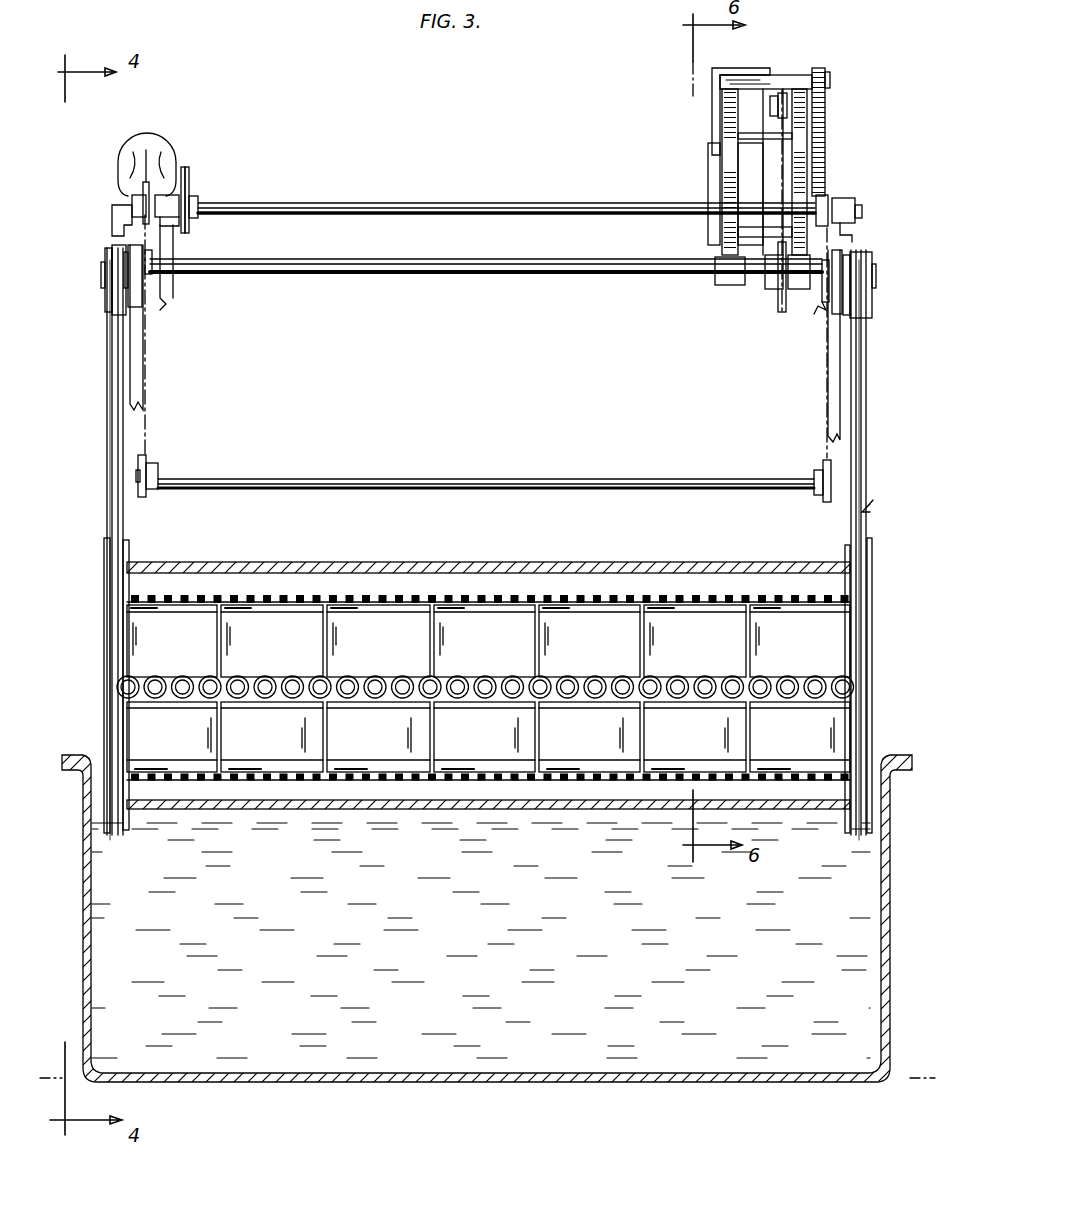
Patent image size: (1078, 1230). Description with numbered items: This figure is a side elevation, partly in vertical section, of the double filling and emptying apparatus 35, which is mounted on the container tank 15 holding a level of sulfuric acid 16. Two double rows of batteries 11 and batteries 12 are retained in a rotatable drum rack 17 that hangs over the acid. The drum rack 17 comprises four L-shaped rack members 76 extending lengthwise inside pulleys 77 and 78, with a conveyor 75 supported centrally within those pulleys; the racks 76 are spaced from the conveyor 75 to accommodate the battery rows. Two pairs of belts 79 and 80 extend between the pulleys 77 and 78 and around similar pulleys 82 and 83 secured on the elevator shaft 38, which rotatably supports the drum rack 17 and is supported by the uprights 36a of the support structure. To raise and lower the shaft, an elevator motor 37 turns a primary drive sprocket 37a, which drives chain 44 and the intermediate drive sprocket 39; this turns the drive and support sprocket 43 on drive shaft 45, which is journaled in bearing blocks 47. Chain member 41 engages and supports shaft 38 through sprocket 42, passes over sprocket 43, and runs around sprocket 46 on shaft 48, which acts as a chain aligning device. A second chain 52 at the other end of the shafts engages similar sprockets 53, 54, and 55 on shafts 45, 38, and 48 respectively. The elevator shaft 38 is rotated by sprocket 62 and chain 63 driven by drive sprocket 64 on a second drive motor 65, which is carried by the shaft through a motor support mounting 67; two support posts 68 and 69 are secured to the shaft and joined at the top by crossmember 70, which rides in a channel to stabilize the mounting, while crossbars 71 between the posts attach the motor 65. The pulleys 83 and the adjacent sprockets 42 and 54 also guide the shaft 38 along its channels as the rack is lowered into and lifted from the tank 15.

The batteries 11 is at (488, 641).
The batteries 12 is at (488, 737).
The container tank 15 is at (803, 1082).
The sulfuric acid 16 is at (705, 1052).
The rotatable drum rack 17 is at (404, 565).
The double filling and emptying apparatus 35 is at (879, 495).
The uprights 36a is at (141, 359).
The elevator motor 37 is at (154, 146).
The primary drive sprocket 37a is at (196, 181).
The elevator shaft 38 is at (452, 268).
The intermediate drive sprocket 39 is at (184, 234).
The chain member 41 is at (147, 440).
The sprocket 42 is at (162, 296).
The drive and support sprocket 43 is at (142, 192).
The chain 44 is at (190, 172).
The drive shaft 45 is at (348, 206).
The sprocket 46 is at (146, 496).
The bearing blocks 47 is at (170, 272).
The shaft 48 is at (692, 482).
The second chain 52 is at (827, 352).
The sprocket 53 is at (824, 196).
The sprocket 54 is at (820, 296).
The sprocket 55 is at (822, 466).
The sprocket 62 is at (778, 302).
The chain 63 is at (826, 150).
The drive sprocket 64 is at (786, 90).
The second drive motor 65 is at (708, 178).
The motor support mounting 67 is at (714, 122).
The support post 68 is at (722, 152).
The support post 69 is at (808, 134).
The crossmember 70 is at (774, 72).
The crossbars 71 is at (788, 134).
The conveyor 75 is at (135, 690).
The L-shaped rack members 76 is at (213, 590).
The pulley 77 is at (104, 560).
The pulley 78 is at (128, 562).
The belts 79 is at (107, 440).
The belts 80 is at (124, 512).
The pulley 82 is at (110, 288).
The pulley 83 is at (128, 246).